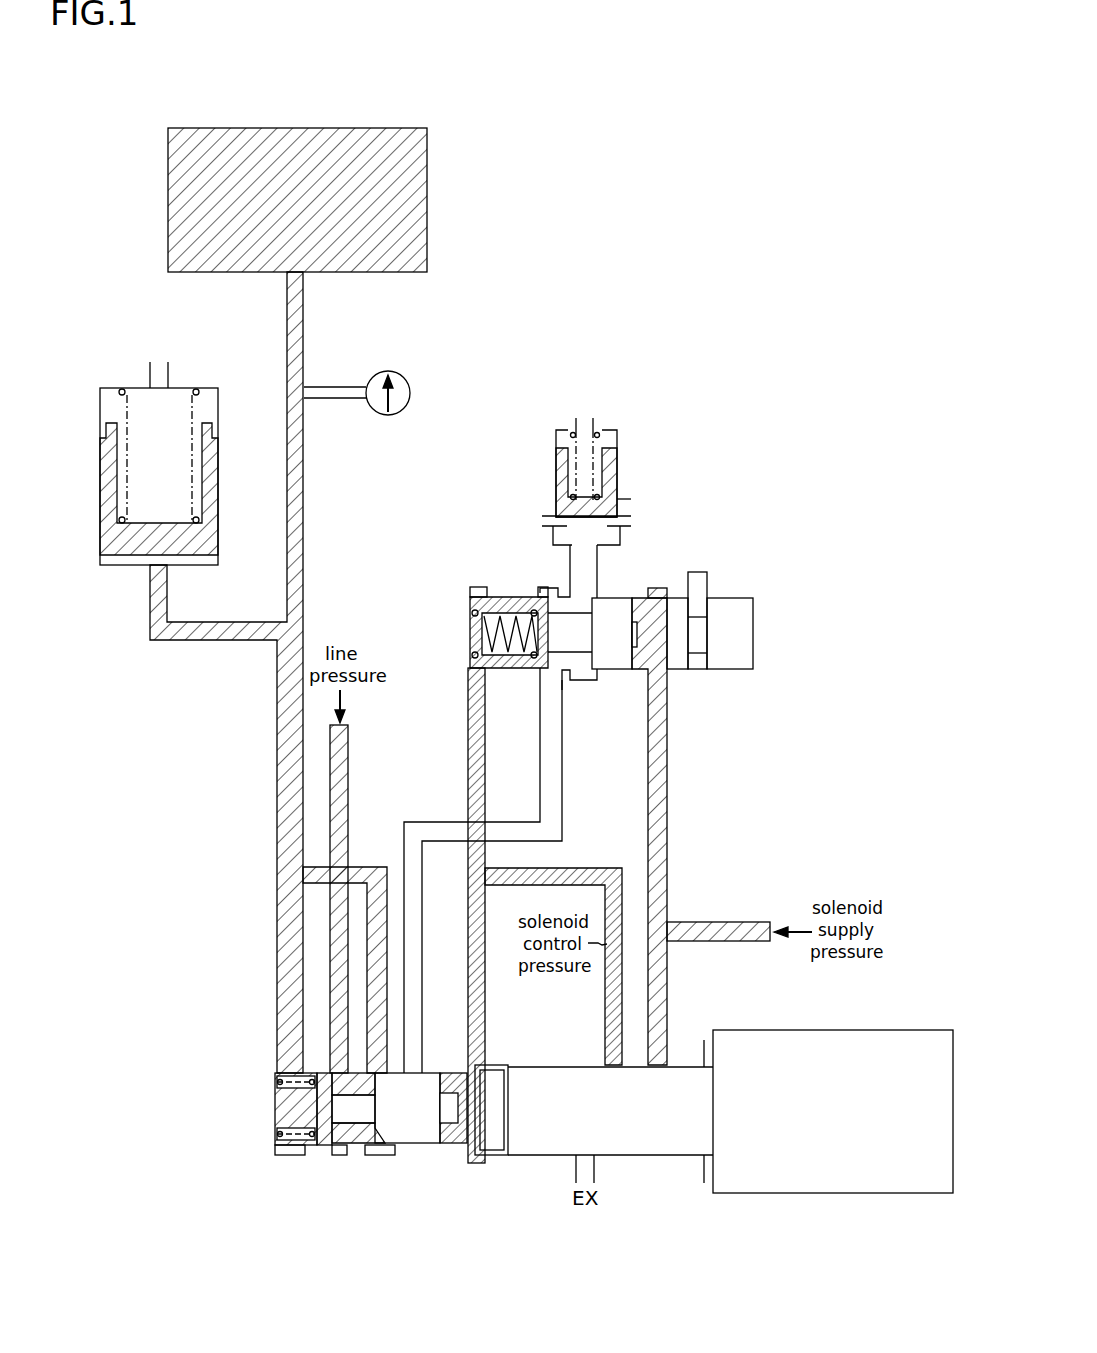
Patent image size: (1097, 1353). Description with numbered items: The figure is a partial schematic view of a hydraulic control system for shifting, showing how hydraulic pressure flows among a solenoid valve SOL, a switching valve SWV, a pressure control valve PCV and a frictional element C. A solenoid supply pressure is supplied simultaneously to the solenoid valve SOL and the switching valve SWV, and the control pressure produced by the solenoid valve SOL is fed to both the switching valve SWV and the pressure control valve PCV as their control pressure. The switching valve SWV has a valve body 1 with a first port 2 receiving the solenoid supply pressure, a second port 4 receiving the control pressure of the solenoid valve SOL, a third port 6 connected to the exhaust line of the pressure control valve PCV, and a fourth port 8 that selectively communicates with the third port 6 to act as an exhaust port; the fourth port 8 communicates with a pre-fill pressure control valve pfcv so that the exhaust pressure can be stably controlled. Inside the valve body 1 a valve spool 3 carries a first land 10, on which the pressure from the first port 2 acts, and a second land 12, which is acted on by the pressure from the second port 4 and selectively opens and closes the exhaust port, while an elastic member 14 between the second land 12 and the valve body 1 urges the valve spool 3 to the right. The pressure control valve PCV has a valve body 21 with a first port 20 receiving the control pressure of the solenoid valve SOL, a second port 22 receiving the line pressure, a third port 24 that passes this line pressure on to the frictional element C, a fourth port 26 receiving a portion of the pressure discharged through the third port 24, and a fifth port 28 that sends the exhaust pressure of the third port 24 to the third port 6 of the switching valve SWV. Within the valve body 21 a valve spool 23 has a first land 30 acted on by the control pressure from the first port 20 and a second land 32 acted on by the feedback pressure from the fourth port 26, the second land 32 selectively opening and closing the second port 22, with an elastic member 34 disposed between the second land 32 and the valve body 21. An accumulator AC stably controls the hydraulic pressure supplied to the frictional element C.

The valve body 1 is at (615, 625).
The first port 2 is at (660, 680).
The valve spool 3 is at (577, 648).
The second port 4 is at (485, 686).
The third port 6 is at (562, 688).
The fourth port 8 is at (588, 590).
The first land 10 is at (655, 607).
The second land 12 is at (520, 597).
The elastic member 14 is at (472, 610).
The first port 20 is at (482, 1058).
The valve body 21 is at (357, 1145).
The second port 22 is at (337, 1060).
The valve spool 23 is at (350, 1118).
The third port 24 is at (365, 1080).
The fourth port 26 is at (275, 1064).
The fifth port 28 is at (415, 1063).
The first land 30 is at (395, 1132).
The second land 32 is at (296, 1150).
The elastic member 34 is at (278, 1134).
The frictional element C is at (300, 128).
The accumulator AC is at (106, 362).
The pressure control valve PCV is at (236, 1180).
The switching valve SWV is at (753, 577).
The solenoid valve SOL is at (833, 1111).
The pre-fill pressure control valve pfcv is at (640, 462).